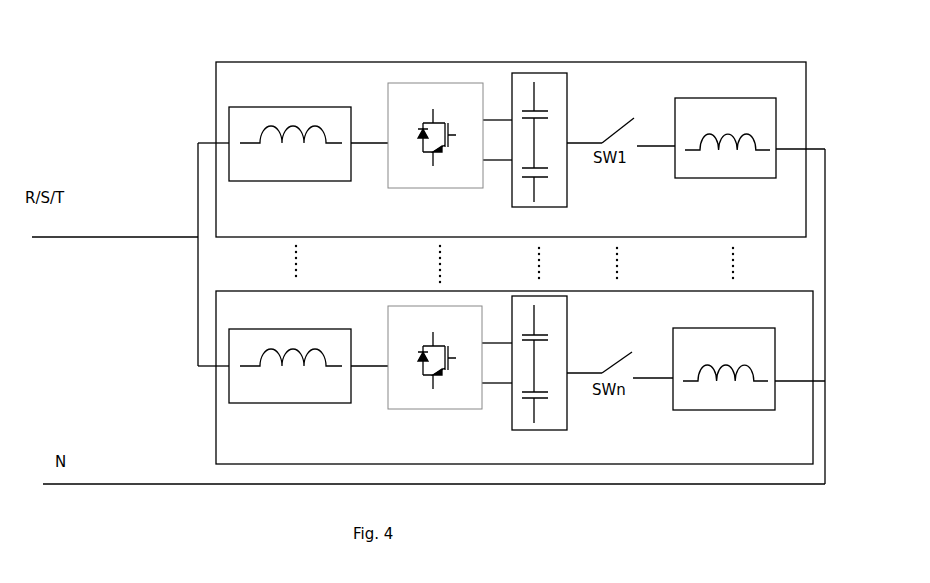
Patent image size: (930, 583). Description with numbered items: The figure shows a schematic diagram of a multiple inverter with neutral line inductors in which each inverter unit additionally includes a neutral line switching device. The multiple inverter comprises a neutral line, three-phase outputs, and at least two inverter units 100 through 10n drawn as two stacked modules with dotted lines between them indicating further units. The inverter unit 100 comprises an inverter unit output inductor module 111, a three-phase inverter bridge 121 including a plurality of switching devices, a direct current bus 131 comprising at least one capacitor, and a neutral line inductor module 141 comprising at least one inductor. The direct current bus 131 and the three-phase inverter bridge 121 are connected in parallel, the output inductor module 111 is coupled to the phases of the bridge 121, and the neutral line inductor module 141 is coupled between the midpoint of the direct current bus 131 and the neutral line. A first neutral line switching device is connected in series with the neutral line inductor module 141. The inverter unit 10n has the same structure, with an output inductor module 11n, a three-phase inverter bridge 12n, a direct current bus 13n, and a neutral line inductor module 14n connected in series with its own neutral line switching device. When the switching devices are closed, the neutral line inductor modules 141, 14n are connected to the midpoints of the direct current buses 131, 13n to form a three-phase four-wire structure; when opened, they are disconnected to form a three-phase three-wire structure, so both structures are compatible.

The inverter unit 100 is at (512, 62).
The inverter unit 10n is at (426, 289).
The inverter unit output inductor module 111 is at (257, 181).
The three-phase inverter bridge 121 is at (452, 188).
The direct current bus 131 is at (539, 207).
The neutral line inductor module 141 is at (703, 178).
The inverter unit output inductor module 11n is at (255, 403).
The three-phase inverter bridge 12n is at (453, 409).
The direct current bus 13n is at (539, 430).
The neutral line inductor module 14n is at (699, 410).